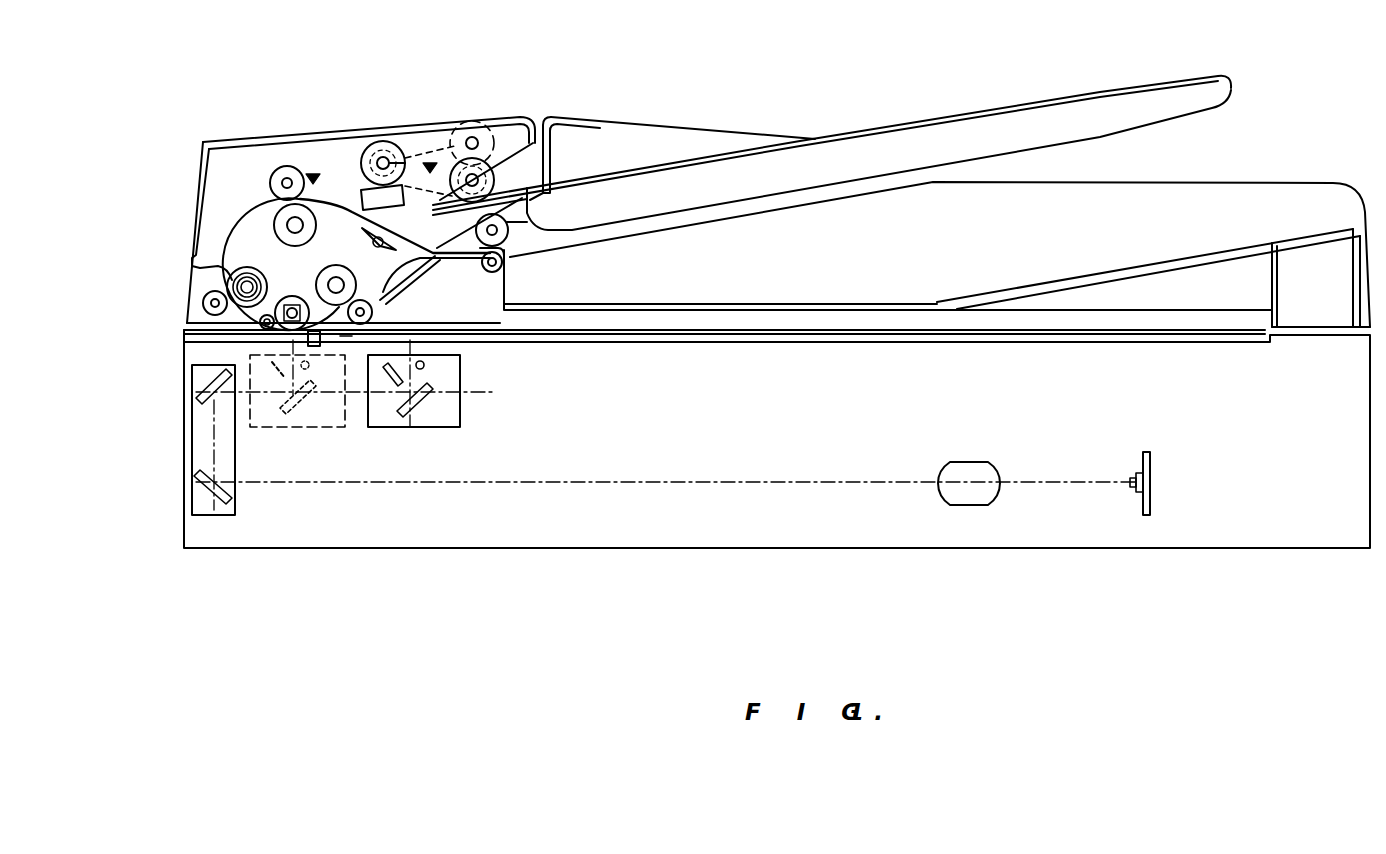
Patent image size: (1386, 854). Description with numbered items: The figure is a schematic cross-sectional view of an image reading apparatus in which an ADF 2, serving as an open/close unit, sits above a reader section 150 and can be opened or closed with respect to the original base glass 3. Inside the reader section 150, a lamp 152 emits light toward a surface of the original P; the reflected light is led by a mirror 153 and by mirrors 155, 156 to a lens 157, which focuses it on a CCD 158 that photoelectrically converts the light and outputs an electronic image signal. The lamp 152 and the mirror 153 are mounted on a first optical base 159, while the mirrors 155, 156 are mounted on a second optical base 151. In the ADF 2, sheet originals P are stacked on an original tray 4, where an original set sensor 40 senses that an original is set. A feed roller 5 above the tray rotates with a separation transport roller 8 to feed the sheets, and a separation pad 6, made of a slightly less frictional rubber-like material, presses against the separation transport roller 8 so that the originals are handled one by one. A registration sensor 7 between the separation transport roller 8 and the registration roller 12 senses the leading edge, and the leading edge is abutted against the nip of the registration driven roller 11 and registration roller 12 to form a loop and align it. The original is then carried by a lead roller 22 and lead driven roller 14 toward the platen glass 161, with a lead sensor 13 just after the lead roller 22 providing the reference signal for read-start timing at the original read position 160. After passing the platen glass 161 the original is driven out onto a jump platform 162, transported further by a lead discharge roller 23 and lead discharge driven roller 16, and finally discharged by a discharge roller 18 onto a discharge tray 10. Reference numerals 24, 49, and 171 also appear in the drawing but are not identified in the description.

The ADF 2 is at (655, 94).
The original base glass 3 is at (617, 336).
The original tray 4 is at (752, 175).
The feed roller 5 is at (480, 135).
The separation pad 6 is at (360, 150).
The registration sensor 7 is at (313, 172).
The separation transport roller 8 is at (385, 160).
The discharge tray 10 is at (805, 305).
The registration driven roller 11 is at (287, 166).
The registration roller 12 is at (293, 297).
The lead sensor 13 is at (245, 327).
The lead driven roller 14 is at (204, 305).
The lead discharge driven roller 16 is at (372, 312).
The discharge roller 18 is at (482, 263).
The lead roller 22 is at (230, 245).
The lead discharge roller 23 is at (408, 265).
The pressing roller 24 is at (265, 210).
The original set sensor 40 is at (430, 162).
The upper cover 49 is at (688, 150).
The reader section 150 is at (1163, 540).
The second optical base 151 is at (225, 508).
The lamp 152 is at (455, 372).
The mirror 153 is at (417, 400).
The mirror 155 is at (207, 397).
The mirror 156 is at (213, 490).
The lens 157 is at (970, 470).
The CCD 158 is at (1150, 478).
The first optical base 159 is at (452, 416).
The original read position 160 is at (310, 417).
The platen glass 161 is at (262, 340).
The jump platform 162 is at (345, 338).
The guide member 171 is at (547, 190).
The original P is at (933, 95).